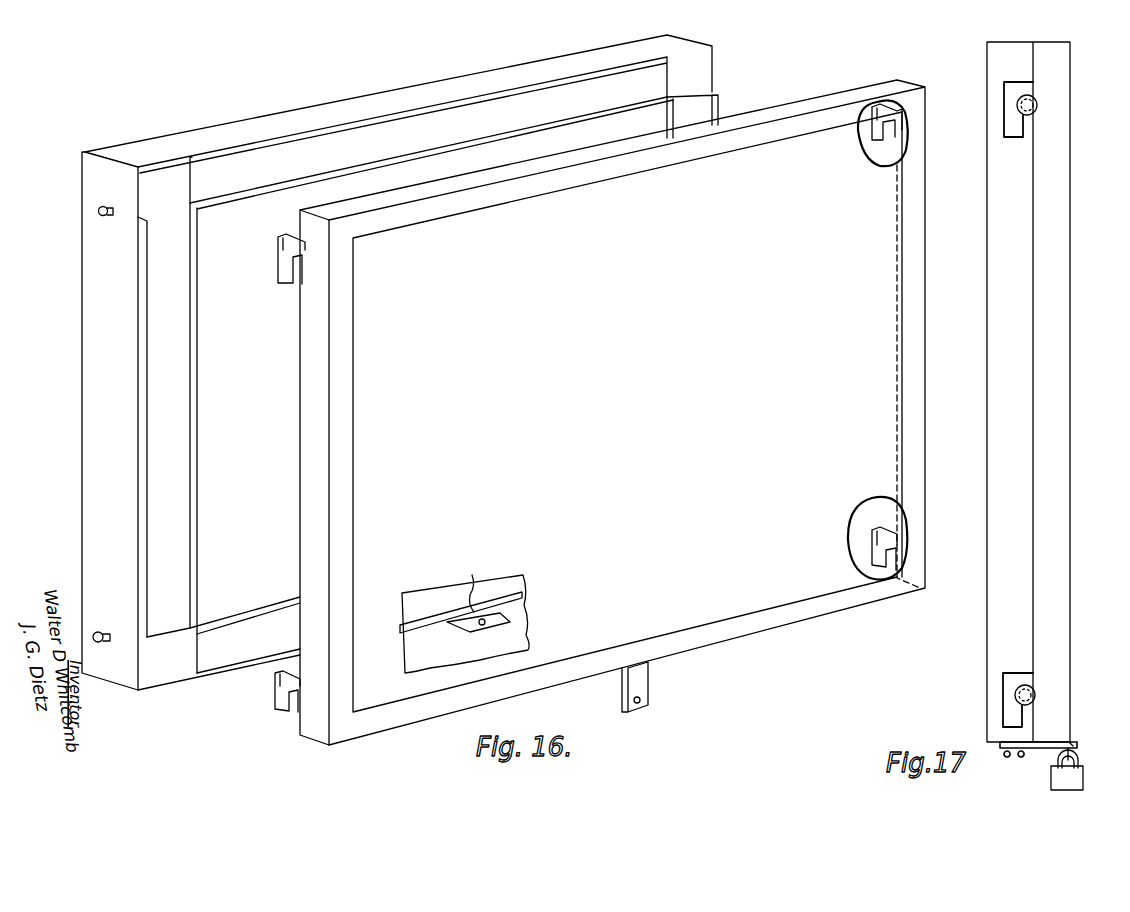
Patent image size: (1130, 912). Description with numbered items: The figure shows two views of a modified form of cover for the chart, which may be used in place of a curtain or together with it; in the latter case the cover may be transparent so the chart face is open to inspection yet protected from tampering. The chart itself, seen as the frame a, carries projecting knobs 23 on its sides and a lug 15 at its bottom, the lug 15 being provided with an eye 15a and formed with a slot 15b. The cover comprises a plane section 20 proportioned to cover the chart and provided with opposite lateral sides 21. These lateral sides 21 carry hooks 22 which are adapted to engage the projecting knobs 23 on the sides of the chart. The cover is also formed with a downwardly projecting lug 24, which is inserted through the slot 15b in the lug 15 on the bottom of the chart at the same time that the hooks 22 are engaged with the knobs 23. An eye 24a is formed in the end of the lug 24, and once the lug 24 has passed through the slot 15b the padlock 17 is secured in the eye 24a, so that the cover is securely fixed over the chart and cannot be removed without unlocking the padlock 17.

In FIG. 16, the outer window frame a is at (96, 305).
In FIG. 17, the outer window frame a is at (1000, 613).
In FIG. 16, the lug 15 is at (528, 603).
In FIG. 17, the lug 15 is at (1076, 746).
In FIG. 16, the eye 15a is at (485, 628).
In FIG. 16, the slot 15b is at (482, 618).
In FIG. 17, the slot 15b is at (1080, 738).
In FIG. 17, the padlock 17 is at (1075, 776).
In FIG. 16, the plane section 20 is at (627, 412).
In FIG. 16, the lateral sides 21 is at (315, 311).
In FIG. 16, the hooks 22 is at (277, 268).
In FIG. 17, the hooks 22 is at (1012, 127).
In FIG. 16, the projecting knobs 23 is at (98, 211).
In FIG. 17, the projecting knobs 23 is at (1018, 102).
In FIG. 16, the downwardly projecting lug 24 is at (645, 676).
In FIG. 16, the eye 24a is at (640, 703).